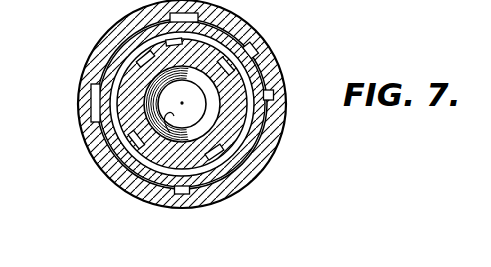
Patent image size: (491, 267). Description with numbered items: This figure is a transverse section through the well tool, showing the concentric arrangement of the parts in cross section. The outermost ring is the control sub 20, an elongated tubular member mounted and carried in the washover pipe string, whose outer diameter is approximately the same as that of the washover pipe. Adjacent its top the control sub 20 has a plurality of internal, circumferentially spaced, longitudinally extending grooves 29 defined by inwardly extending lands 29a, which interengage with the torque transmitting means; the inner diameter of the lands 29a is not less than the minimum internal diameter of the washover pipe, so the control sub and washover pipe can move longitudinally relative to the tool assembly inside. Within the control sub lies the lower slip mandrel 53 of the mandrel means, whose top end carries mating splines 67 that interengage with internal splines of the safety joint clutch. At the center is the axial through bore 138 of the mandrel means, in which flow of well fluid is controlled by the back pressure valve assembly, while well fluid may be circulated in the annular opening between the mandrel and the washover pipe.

The control sub 20 is at (276, 137).
The grooves 29 is at (266, 102).
The lands 29a is at (100, 127).
The lower slip mandrel 53 is at (134, 108).
The splines 67 is at (146, 63).
The axial through bore 138 is at (141, 148).